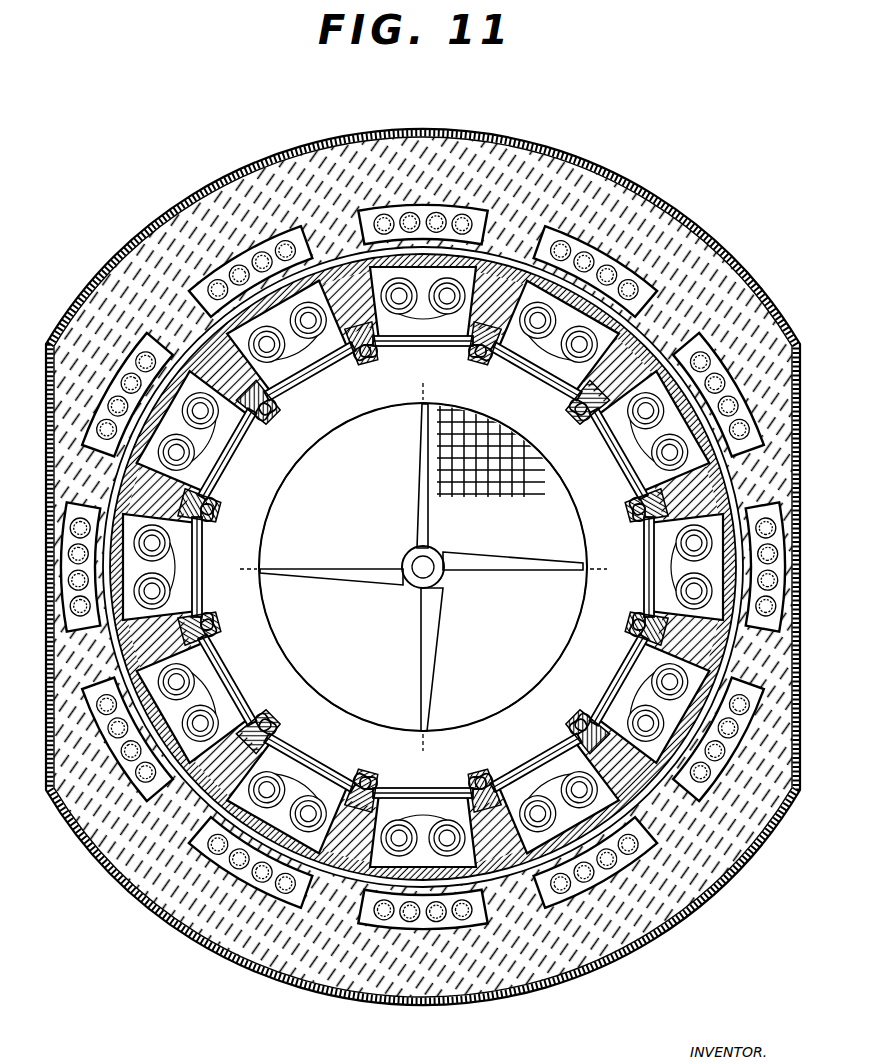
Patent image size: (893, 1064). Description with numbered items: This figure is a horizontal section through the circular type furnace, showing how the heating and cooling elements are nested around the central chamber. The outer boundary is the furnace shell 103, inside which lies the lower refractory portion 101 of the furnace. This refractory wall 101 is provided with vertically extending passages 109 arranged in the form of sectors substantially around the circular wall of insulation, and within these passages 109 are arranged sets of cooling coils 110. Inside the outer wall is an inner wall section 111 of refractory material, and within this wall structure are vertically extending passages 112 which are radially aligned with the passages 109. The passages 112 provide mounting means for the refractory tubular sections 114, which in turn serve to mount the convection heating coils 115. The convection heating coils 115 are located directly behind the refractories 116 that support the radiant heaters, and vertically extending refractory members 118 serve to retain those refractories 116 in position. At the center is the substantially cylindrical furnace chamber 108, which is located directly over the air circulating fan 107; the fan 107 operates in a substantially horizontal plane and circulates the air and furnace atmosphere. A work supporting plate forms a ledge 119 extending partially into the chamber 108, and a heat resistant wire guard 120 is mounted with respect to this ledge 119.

The lower refractory portion 101 is at (290, 960).
The furnace shell 103 is at (393, 1006).
The air circulating fan 107 is at (438, 650).
The furnace chamber 108 is at (423, 567).
The vertically extending passages 109 is at (240, 262).
The cooling coils 110 is at (215, 288).
The inner wall section 111 is at (258, 731).
The vertically extending passages 112 is at (426, 812).
The refractory tubular sections 114 is at (622, 463).
The convection heating coils 115 is at (423, 567).
The refractories 116 is at (240, 682).
The vertically extending refractory members 118 is at (472, 355).
The ledge 119 is at (293, 448).
The heat resistant wire guard 120 is at (497, 482).